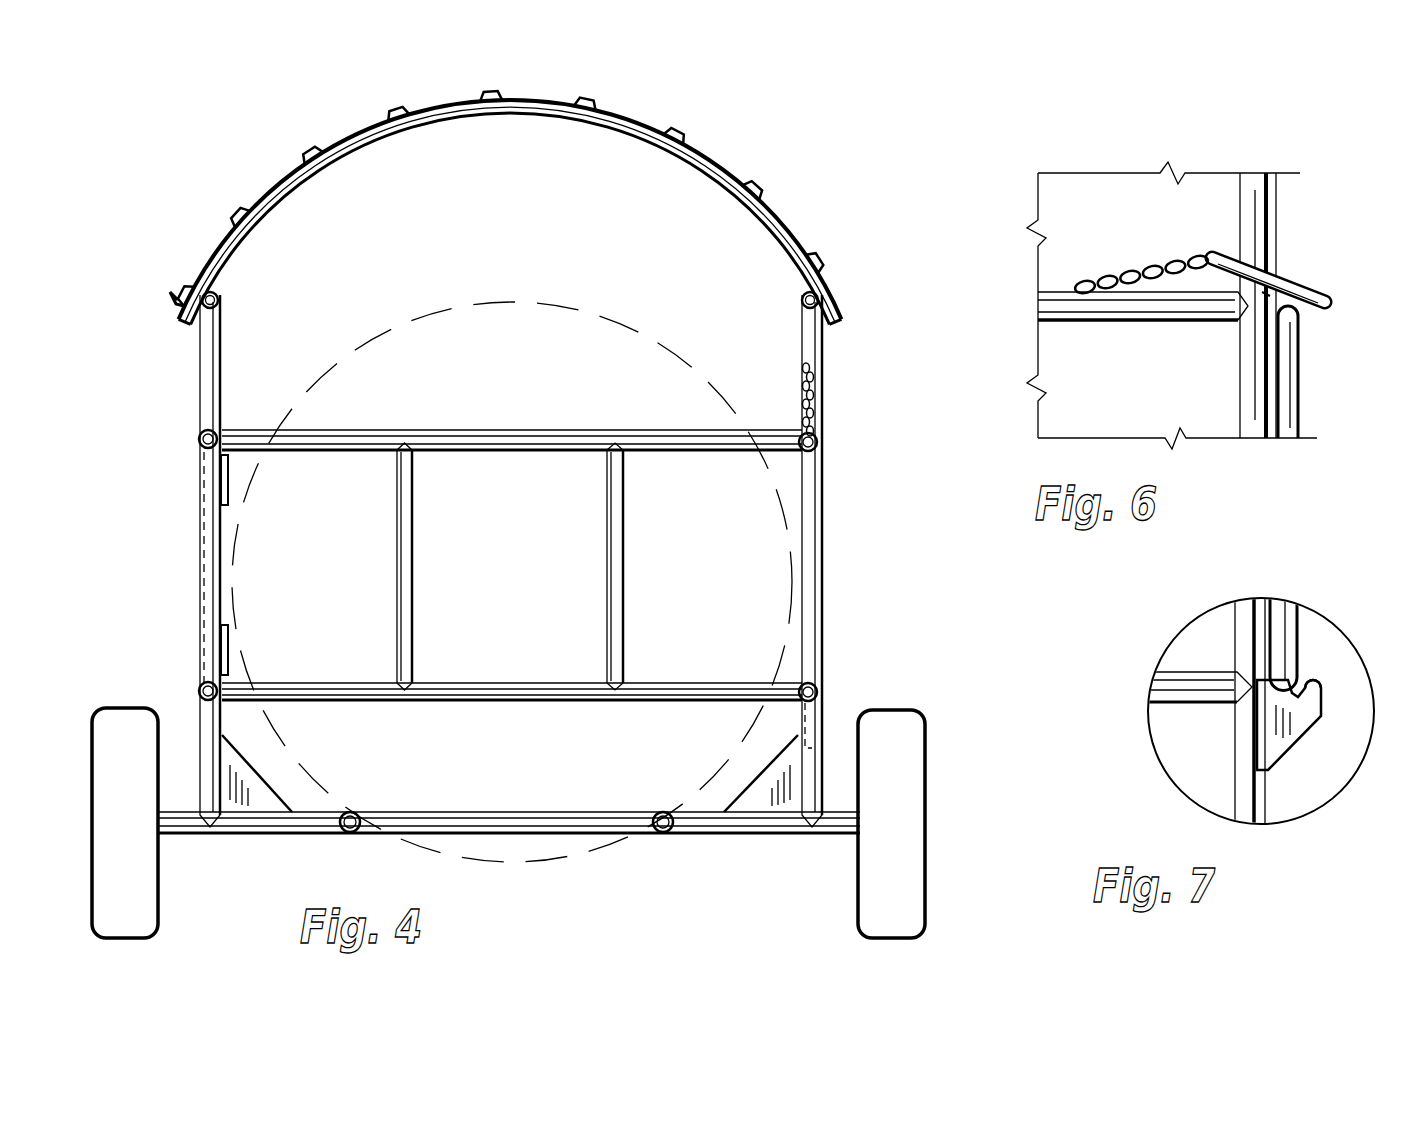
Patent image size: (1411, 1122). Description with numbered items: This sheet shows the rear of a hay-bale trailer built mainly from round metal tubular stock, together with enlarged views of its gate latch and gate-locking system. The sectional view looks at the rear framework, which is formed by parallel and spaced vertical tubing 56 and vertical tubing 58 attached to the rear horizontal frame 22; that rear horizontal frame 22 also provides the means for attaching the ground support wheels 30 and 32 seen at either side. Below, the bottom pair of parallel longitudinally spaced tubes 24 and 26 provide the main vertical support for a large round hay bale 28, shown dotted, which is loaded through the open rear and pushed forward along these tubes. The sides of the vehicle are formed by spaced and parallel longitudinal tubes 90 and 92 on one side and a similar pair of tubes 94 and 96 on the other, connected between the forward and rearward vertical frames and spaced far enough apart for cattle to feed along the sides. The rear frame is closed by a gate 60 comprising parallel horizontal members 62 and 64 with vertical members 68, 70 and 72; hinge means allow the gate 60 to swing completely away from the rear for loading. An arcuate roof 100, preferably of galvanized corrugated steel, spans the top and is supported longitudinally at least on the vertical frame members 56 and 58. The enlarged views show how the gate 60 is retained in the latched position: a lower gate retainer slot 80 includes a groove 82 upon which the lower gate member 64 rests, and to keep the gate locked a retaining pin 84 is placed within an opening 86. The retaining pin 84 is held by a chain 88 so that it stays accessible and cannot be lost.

In FIG. 4, the rear horizontal frame 22 is at (753, 821).
In FIG. 4, the bottom tube 24 is at (656, 816).
In FIG. 4, the bottom tube 26 is at (357, 817).
In FIG. 4, the hay bale 28 is at (597, 316).
In FIG. 4, the ground support wheel 30 is at (912, 776).
In FIG. 4, the ground support wheel 32 is at (106, 758).
In FIG. 4, the vertical tubing 56 is at (207, 330).
In FIG. 4, the vertical tubing 58 is at (807, 330).
In FIG. 6, the vertical tubing 58 is at (1248, 221).
In FIG. 7, the vertical tubing 58 is at (1240, 758).
In FIG. 4, the gate 60 is at (512, 521).
In FIG. 4, the horizontal member 62 is at (515, 438).
In FIG. 4, the horizontal member 64 is at (498, 690).
In FIG. 7, the horizontal member 64 is at (1279, 617).
In FIG. 4, the vertical member 68 is at (401, 530).
In FIG. 4, the vertical member 70 is at (620, 546).
In FIG. 6, the vertical member 72 is at (1290, 384).
In FIG. 7, the lower gate retainer slot 80 is at (1293, 727).
In FIG. 7, the groove 82 is at (1313, 683).
In FIG. 6, the retaining pin 84 is at (1310, 298).
In FIG. 6, the opening 86 is at (1265, 291).
In FIG. 4, the chain 88 is at (816, 412).
In FIG. 6, the chain 88 is at (1088, 284).
In FIG. 4, the longitudinal tube 90 is at (814, 686).
In FIG. 7, the longitudinal tube 90 is at (1181, 690).
In FIG. 4, the longitudinal tube 92 is at (816, 449).
In FIG. 6, the longitudinal tube 92 is at (1146, 305).
In FIG. 4, the longitudinal tube 94 is at (202, 685).
In FIG. 4, the longitudinal tube 96 is at (201, 434).
In FIG. 4, the arcuate roof 100 is at (623, 123).